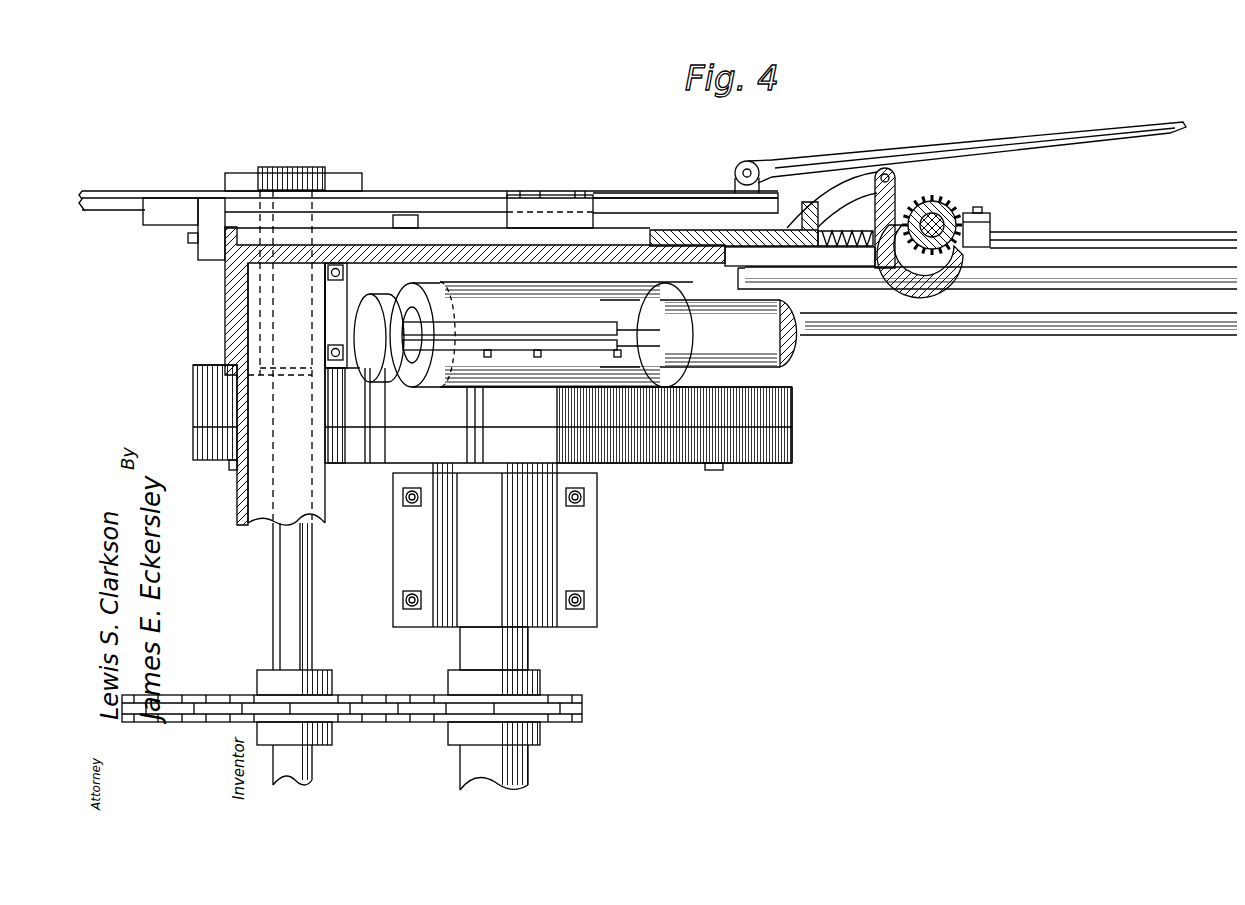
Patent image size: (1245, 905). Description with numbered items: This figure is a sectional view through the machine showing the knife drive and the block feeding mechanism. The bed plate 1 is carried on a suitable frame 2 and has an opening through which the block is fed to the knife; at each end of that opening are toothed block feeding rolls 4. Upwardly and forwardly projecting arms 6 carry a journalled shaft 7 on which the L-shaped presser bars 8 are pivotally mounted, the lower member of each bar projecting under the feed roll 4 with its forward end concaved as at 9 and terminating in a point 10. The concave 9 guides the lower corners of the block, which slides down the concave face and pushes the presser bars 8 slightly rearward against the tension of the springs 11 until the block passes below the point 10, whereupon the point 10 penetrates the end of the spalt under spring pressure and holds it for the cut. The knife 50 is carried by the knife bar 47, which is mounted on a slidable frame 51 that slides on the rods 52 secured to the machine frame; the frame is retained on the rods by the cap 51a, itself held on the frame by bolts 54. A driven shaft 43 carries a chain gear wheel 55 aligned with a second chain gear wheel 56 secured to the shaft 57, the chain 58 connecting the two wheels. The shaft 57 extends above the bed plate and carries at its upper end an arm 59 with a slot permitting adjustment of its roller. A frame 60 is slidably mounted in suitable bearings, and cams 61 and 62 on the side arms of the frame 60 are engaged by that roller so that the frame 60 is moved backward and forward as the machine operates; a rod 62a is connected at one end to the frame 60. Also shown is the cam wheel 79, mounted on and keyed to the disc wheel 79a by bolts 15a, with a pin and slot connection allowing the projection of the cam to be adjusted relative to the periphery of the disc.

The bed plate 1 is at (468, 247).
The frame 2 is at (262, 520).
The block feeding rolls 4 is at (948, 210).
The arms 6 is at (845, 198).
The shaft 7 is at (893, 176).
The presser bars 8 is at (878, 260).
The concave 9 is at (965, 258).
The point 10 is at (958, 262).
The springs 11 is at (800, 249).
The bolts 15a is at (232, 470).
The shaft 43 is at (510, 648).
The knife bar 47 is at (1020, 322).
The knife 50 is at (1078, 287).
The slidable frame 51 is at (700, 281).
The cap 51a is at (635, 378).
The rods 52 is at (792, 348).
The bolts 54 is at (543, 357).
The chain gear wheel 55 is at (540, 688).
The chain gear wheel 56 is at (262, 680).
The shaft 57 is at (300, 628).
The chain 58 is at (385, 697).
The arm 59 is at (288, 182).
The frame 60 is at (655, 205).
The cam 61 is at (240, 182).
The cam 62 is at (352, 187).
The rod 62a is at (1040, 150).
The cam wheel 79 is at (205, 440).
The disc wheel 79a is at (203, 393).